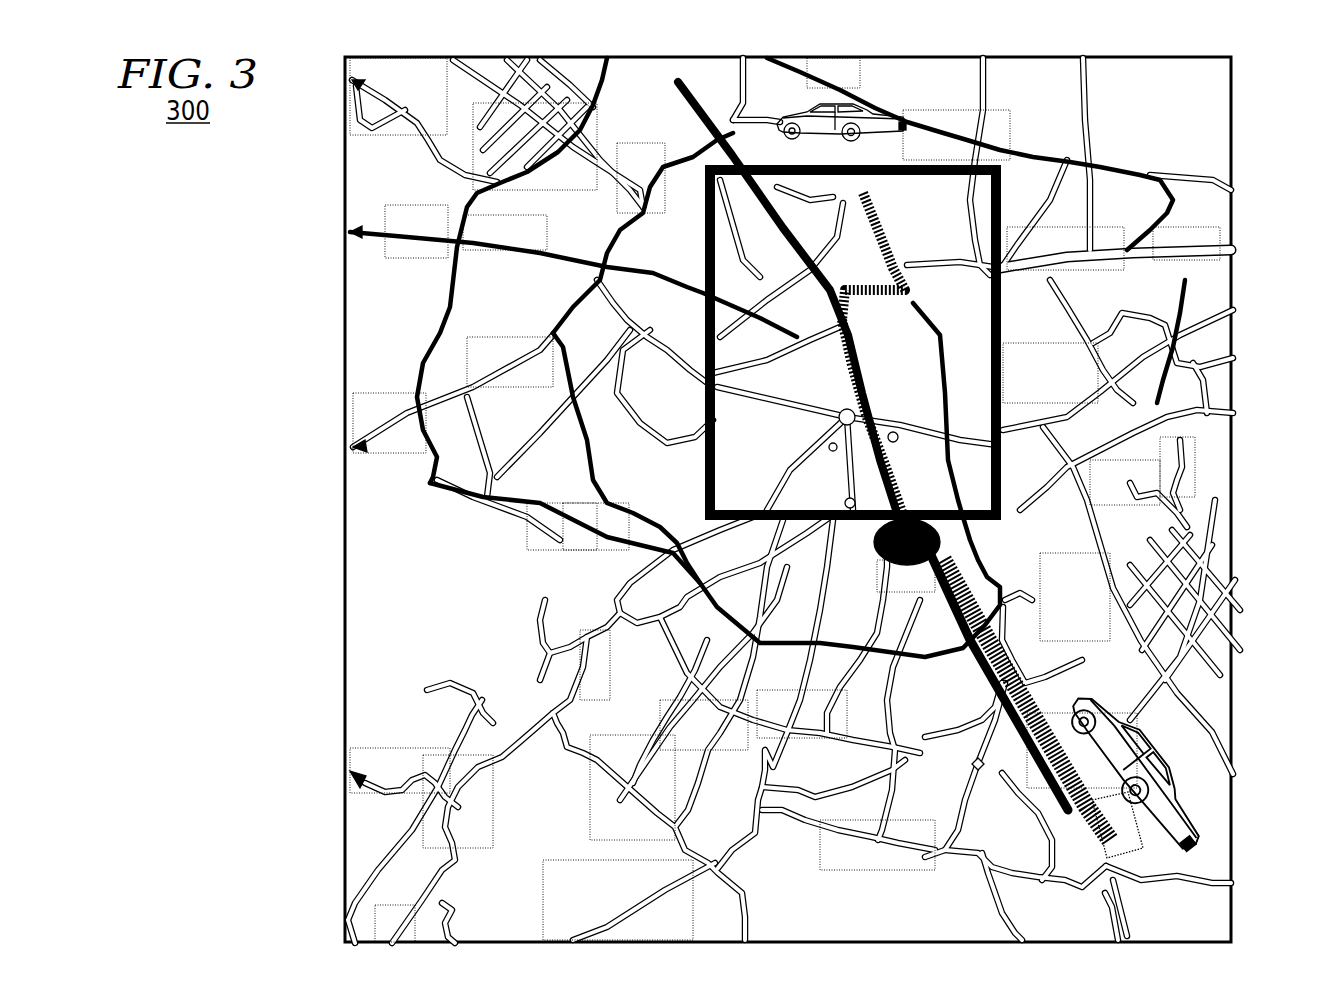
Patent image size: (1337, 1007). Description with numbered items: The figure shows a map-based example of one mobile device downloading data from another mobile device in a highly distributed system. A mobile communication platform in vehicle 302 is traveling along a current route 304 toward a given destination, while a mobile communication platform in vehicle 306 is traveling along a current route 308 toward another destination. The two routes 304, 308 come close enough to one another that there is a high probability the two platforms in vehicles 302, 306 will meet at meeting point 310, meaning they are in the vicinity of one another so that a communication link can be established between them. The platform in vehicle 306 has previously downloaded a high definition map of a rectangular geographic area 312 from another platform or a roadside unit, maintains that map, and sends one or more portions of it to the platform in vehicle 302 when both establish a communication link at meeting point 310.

The vehicle 302 is at (1192, 771).
The current route 304 is at (1127, 740).
The vehicle 306 is at (856, 104).
The current route 308 is at (907, 297).
The meeting point 310 is at (1099, 596).
The rectangular geographic area 312 is at (1001, 473).